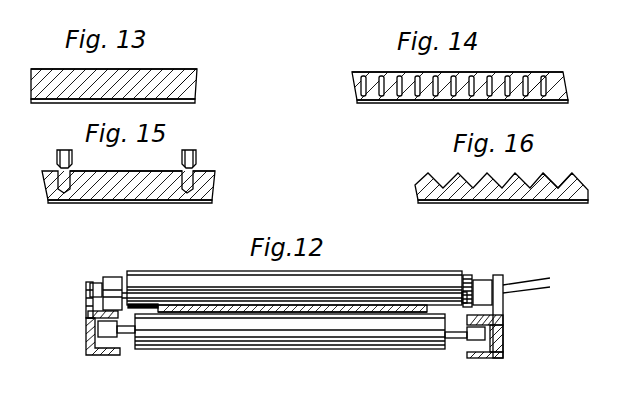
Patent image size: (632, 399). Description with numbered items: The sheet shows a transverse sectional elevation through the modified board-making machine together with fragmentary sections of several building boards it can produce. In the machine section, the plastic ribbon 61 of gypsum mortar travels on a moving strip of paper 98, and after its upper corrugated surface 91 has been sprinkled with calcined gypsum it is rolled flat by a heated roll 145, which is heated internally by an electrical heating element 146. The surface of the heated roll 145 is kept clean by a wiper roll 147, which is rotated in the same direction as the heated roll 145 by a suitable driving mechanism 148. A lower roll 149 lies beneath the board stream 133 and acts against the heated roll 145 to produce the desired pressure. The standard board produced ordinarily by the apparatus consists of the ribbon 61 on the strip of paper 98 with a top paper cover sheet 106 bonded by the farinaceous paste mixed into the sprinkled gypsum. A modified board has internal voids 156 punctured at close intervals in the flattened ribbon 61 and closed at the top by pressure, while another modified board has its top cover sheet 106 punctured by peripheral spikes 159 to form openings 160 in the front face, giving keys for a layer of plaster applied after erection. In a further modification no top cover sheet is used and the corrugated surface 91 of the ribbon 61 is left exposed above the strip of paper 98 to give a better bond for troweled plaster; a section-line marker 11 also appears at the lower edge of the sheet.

In FIG. 12, the section line 11 is at (73, 392).
In FIG. 13, the ribbon 61 is at (190, 86).
In FIG. 14, the ribbon 61 is at (464, 86).
In FIG. 15, the ribbon 61 is at (212, 188).
In FIG. 16, the ribbon 61 is at (576, 191).
In FIG. 12, the ribbon 61 is at (408, 313).
In FIG. 16, the corrugated surface 91 is at (549, 179).
In FIG. 13, the strip of paper 98 is at (190, 102).
In FIG. 14, the strip of paper 98 is at (566, 102).
In FIG. 15, the strip of paper 98 is at (204, 204).
In FIG. 16, the strip of paper 98 is at (569, 204).
In FIG. 12, the strip of paper 98 is at (453, 323).
In FIG. 13, the top paper cover sheet 106 is at (141, 73).
In FIG. 14, the top paper cover sheet 106 is at (470, 76).
In FIG. 15, the top paper cover sheet 106 is at (205, 172).
In FIG. 12, the top paper cover sheet 106 is at (281, 398).
In FIG. 13, the board stream 133 is at (170, 76).
In FIG. 14, the board stream 133 is at (515, 74).
In FIG. 12, the heated roll 145 is at (407, 272).
In FIG. 12, the electrical heating element 146 is at (498, 277).
In FIG. 12, the wiper roll 147 is at (437, 294).
In FIG. 12, the driving mechanism 148 is at (470, 275).
In FIG. 12, the lower roll 149 is at (365, 350).
In FIG. 14, the internal voids 156 is at (548, 76).
In FIG. 15, the peripheral spikes 159 is at (60, 150).
In FIG. 15, the openings 160 is at (210, 178).